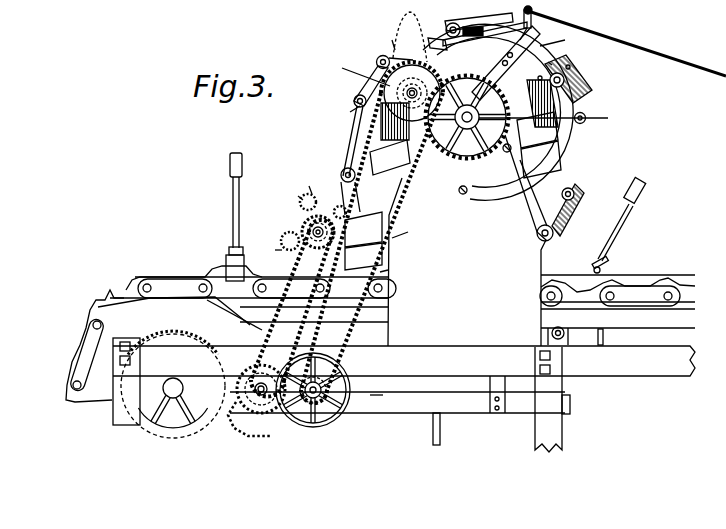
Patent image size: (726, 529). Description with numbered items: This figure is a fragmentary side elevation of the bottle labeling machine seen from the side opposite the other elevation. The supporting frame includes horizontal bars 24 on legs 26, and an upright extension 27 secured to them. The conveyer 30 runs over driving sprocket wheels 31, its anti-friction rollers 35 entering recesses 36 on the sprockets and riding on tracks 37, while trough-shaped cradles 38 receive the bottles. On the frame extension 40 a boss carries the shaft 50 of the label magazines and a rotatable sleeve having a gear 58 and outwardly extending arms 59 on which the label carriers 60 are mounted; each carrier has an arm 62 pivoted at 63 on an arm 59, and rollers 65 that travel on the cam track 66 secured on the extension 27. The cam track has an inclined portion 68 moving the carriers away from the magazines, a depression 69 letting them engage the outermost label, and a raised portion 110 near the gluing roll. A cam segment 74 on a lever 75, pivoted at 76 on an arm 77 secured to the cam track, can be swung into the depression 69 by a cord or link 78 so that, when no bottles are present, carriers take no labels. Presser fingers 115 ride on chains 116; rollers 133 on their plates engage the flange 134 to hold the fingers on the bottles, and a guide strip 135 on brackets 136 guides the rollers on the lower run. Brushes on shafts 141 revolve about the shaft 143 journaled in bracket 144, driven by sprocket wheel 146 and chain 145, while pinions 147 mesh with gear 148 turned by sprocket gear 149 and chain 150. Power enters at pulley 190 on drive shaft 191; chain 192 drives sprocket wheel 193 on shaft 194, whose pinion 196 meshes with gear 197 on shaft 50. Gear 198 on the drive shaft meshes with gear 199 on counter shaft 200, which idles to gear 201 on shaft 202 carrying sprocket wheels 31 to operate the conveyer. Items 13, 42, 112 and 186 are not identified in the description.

The shaft 13 is at (472, 93).
The horizontal members or bars 24 is at (404, 361).
The legs 26 is at (341, 395).
The upright extension 27 is at (480, 185).
The conveyer 30 is at (402, 290).
The driving sprocket wheels 31 is at (90, 355).
The anti-friction rollers 35 is at (158, 268).
The recesses or depressions 36 is at (257, 330).
The tracks 37 is at (467, 317).
The cradles or trough-shaped portions 38 is at (583, 278).
The frame extension 40 is at (528, 66).
The sprocket 42 is at (414, 62).
The shaft 50 is at (465, 146).
The gear 58 is at (541, 159).
The arms 59 is at (464, 127).
The label pickers or carriers 60 is at (472, 22).
The arm 62 is at (378, 58).
The pivot 63 is at (583, 124).
The wheels or rollers 65 is at (354, 101).
The cam track 66 is at (358, 122).
The inclined portion 68 is at (485, 39).
The depression or recessed part 69 is at (435, 48).
The cam segment 74 is at (479, 19).
The lever 75 is at (520, 16).
The pivot 76 is at (532, 32).
The arm or extension 77 is at (561, 38).
The cord or link 78 is at (628, 44).
The raised portion 110 is at (403, 199).
The nut 112 is at (603, 266).
The presser fingers 115 is at (611, 238).
The chains 116 is at (603, 336).
The roller or wheel 133 is at (228, 250).
The track or horizontal flange 134 is at (388, 270).
The track or guide strip 135 is at (397, 418).
The brackets or supports 136 is at (490, 381).
The shafts 141 is at (309, 186).
The shaft 143 is at (300, 205).
The bracket or arm 144 is at (316, 304).
The chain 145 is at (278, 250).
The sprocket wheel 146 is at (281, 240).
The pinions 147 is at (344, 180).
The gear 148 is at (298, 196).
The sprocket gear 149 is at (295, 307).
The chain 150 is at (380, 313).
The cam rail 186 is at (632, 283).
The pulley 190 is at (338, 420).
The drive shaft 191 is at (293, 418).
The chain 192 is at (408, 232).
The sprocket wheel 193 is at (350, 113).
The shaft 194 is at (397, 48).
The pinion 196 is at (410, 32).
The gear 197 is at (552, 65).
The gear 198 is at (378, 401).
The gear 199 is at (248, 419).
The counter shaft 200 is at (254, 368).
The gear 201 is at (173, 332).
The shaft 202 is at (173, 378).